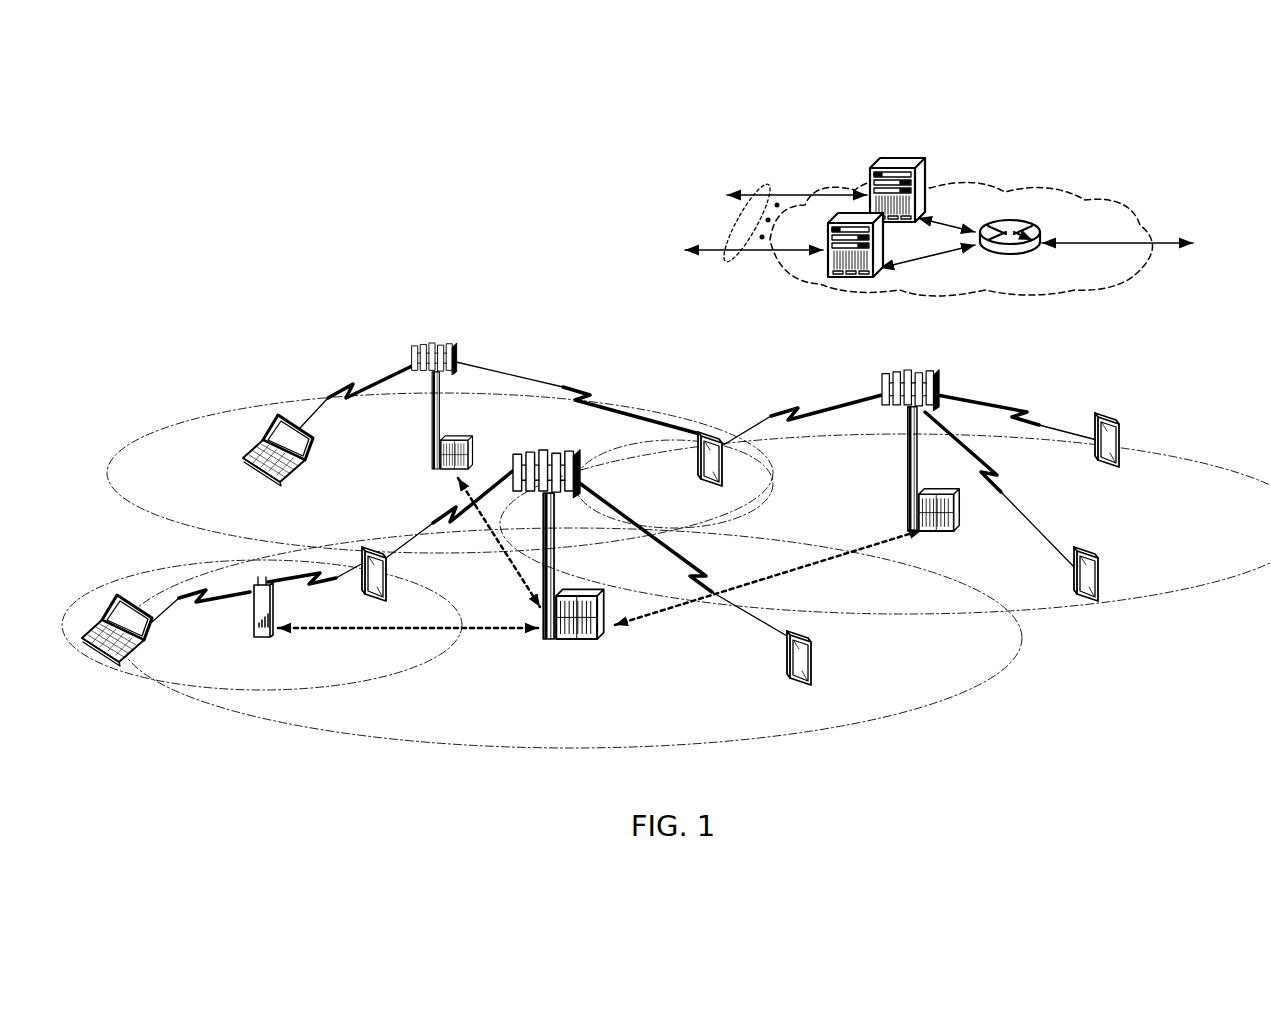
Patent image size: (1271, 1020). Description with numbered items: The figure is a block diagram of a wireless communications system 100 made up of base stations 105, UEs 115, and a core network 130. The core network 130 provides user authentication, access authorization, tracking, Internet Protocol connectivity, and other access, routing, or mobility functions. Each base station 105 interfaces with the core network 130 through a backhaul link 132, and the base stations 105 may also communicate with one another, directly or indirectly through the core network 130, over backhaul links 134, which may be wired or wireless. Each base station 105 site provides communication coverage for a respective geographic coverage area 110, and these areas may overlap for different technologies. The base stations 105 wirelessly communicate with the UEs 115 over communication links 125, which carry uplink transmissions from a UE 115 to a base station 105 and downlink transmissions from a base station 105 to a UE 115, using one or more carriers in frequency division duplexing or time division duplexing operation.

The wireless communications system 100 is at (1185, 133).
The base station 105 is at (432, 450).
The geographic coverage area 110 is at (155, 524).
The UE 115 is at (295, 478).
The communication link 125 is at (350, 385).
The core network 130 is at (1040, 292).
The backhaul link 132 is at (745, 262).
The backhaul link 134 is at (508, 560).